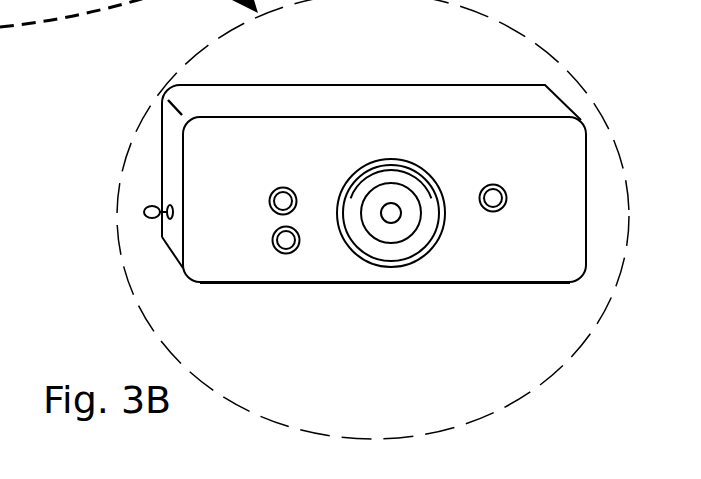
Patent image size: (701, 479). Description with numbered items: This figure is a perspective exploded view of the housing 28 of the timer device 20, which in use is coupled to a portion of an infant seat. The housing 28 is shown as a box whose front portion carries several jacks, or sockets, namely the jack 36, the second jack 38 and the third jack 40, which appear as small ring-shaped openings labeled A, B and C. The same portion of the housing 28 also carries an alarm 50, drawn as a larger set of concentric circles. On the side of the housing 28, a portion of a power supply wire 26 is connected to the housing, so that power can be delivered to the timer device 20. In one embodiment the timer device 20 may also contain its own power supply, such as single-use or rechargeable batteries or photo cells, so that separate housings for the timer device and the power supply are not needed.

The timer device 20 is at (148, 114).
The power supply wire 26 is at (143, 208).
The housing 28 is at (483, 269).
The jack 36 is at (290, 254).
The second jack 38 is at (276, 212).
The third jack 40 is at (494, 212).
The alarm 50 is at (403, 259).